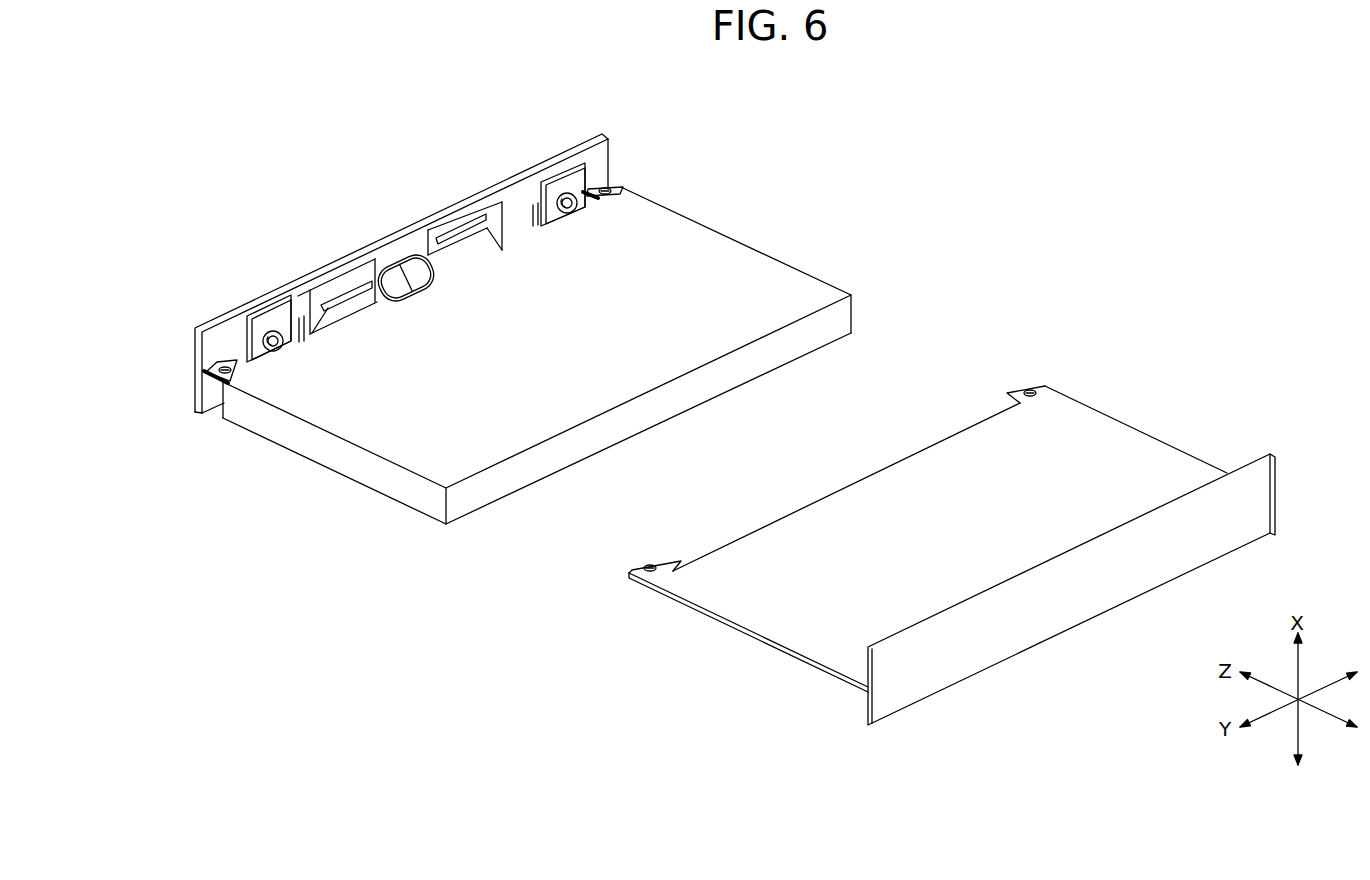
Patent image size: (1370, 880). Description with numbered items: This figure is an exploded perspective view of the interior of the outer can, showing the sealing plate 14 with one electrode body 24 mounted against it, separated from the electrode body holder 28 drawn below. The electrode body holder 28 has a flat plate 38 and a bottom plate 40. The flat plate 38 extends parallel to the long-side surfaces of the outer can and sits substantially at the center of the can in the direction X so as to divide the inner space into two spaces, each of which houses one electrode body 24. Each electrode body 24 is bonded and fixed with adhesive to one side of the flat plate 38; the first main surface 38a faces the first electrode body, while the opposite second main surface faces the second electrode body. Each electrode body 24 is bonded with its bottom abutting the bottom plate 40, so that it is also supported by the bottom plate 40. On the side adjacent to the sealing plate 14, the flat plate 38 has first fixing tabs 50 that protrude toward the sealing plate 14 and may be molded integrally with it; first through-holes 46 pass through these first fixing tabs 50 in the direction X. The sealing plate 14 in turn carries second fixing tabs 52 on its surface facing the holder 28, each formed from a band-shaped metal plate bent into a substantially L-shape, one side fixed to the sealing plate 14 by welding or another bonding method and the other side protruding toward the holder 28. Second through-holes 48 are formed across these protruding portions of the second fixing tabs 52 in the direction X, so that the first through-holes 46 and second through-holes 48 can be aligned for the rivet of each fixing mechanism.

The sealing plate 14 is at (429, 262).
The electrode body 24 is at (335, 455).
The electrode body holder 28 is at (953, 517).
The flat plate 38 is at (901, 514).
The first main surface 38a is at (820, 633).
The bottom plate 40 is at (1098, 598).
The first through-hole 46 is at (832, 472).
The second through-hole 48 is at (225, 364).
The first fixing tab 50 is at (630, 575).
The second fixing tab 52 is at (429, 247).